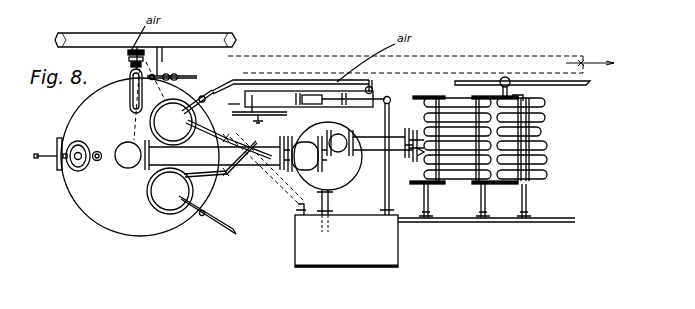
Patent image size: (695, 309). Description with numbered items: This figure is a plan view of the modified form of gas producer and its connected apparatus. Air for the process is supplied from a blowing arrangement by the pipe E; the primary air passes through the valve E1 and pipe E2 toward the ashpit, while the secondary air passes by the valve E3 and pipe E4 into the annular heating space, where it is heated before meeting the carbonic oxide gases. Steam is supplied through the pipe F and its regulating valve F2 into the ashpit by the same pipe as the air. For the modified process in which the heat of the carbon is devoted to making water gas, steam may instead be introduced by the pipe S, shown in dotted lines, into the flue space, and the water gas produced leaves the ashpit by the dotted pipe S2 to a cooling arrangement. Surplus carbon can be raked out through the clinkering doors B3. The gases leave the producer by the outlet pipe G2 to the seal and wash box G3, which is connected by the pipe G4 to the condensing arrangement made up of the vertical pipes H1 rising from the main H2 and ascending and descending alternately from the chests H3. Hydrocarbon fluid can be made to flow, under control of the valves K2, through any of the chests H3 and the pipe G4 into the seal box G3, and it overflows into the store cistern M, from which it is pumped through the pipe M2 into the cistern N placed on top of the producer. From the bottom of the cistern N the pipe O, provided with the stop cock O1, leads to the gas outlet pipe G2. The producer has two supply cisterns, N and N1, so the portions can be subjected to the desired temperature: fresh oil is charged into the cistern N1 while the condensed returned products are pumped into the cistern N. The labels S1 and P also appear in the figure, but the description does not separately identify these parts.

The air pipe E is at (145, 41).
The primary air valve E1 is at (156, 57).
The primary air pipe E2 is at (161, 62).
The secondary air valve E3 is at (121, 58).
The secondary air pipe E4 is at (134, 101).
The steam pipe F is at (197, 77).
The steam regulating valve F2 is at (186, 73).
The steam pipe S is at (198, 97).
The lever arm S1 is at (225, 104).
The water gas outlet pipe S2 is at (233, 63).
The supply cistern N is at (173, 122).
The supply cistern N1 is at (191, 201).
The clinkering doors B3 is at (58, 165).
The gas outlet pipe G2 is at (199, 153).
The seal and wash box G3 is at (323, 177).
The connecting pipe G4 is at (375, 143).
The store cistern M is at (346, 241).
The pump delivery pipe M2 is at (300, 85).
The pipe connection P is at (388, 147).
The cistern outlet pipe O is at (256, 146).
The stop cock O1 is at (232, 142).
The vertical condenser pipes H1 is at (540, 132).
The condenser main H2 is at (428, 212).
The condenser chests H3 is at (518, 185).
The valves K2 is at (484, 195).